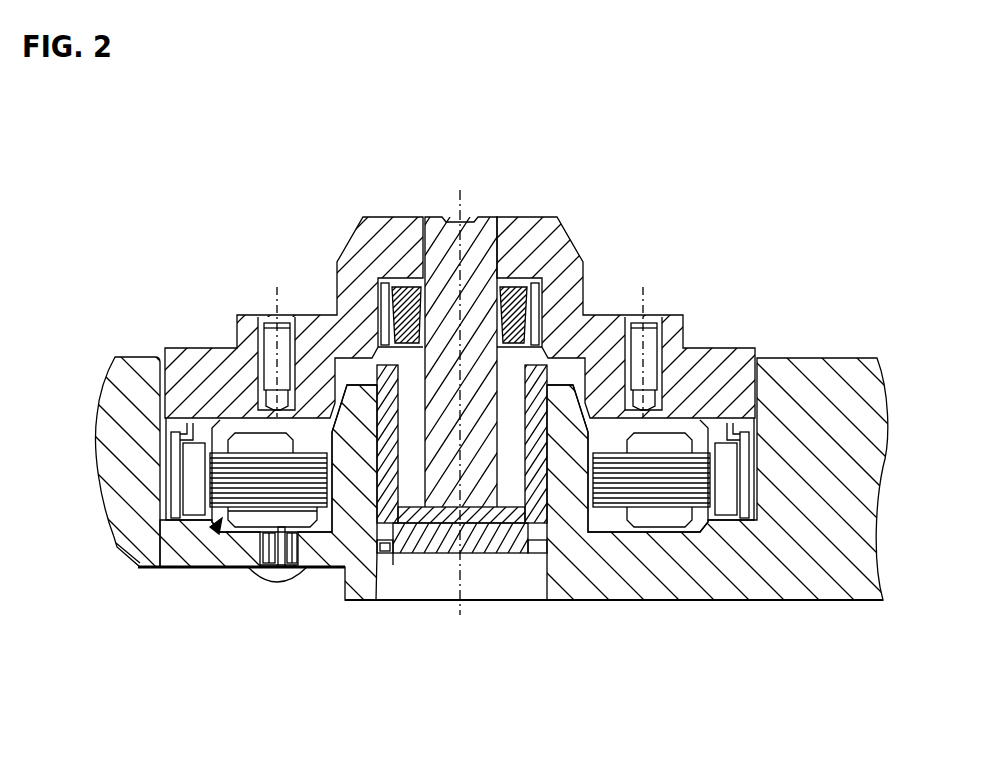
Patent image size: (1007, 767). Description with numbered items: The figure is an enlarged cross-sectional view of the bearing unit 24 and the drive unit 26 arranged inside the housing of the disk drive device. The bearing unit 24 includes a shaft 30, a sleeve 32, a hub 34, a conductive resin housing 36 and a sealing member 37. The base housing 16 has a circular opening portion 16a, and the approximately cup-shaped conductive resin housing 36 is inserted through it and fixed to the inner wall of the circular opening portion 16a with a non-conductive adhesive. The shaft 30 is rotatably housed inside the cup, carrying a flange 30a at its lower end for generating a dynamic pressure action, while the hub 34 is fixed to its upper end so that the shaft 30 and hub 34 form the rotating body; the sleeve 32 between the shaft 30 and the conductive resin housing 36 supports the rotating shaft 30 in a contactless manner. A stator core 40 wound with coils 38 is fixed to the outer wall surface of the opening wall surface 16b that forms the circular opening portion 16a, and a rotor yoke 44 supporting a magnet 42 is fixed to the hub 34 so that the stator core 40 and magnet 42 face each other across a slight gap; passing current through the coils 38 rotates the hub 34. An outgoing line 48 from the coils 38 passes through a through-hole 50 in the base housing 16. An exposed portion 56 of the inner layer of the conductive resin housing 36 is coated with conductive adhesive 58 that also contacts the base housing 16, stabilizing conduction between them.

The base housing 16 is at (822, 548).
The circular opening portion 16a is at (382, 575).
The opening wall surface 16b is at (582, 478).
The bearing unit 24 is at (503, 364).
The drive unit 26 is at (216, 532).
The shaft 30 is at (426, 389).
The flange 30a is at (485, 547).
The sleeve 32 is at (527, 365).
The hub 34 is at (376, 228).
The conductive resin housing 36 is at (508, 547).
The sealing member 37 is at (524, 283).
The coils 38 is at (677, 445).
The stator core 40 is at (665, 485).
The magnet 42 is at (727, 502).
The rotor yoke 44 is at (742, 472).
The outgoing line 48 is at (302, 545).
The through-hole 50 is at (272, 553).
The exposed portion 56 is at (398, 556).
The conductive adhesive 58 is at (397, 552).